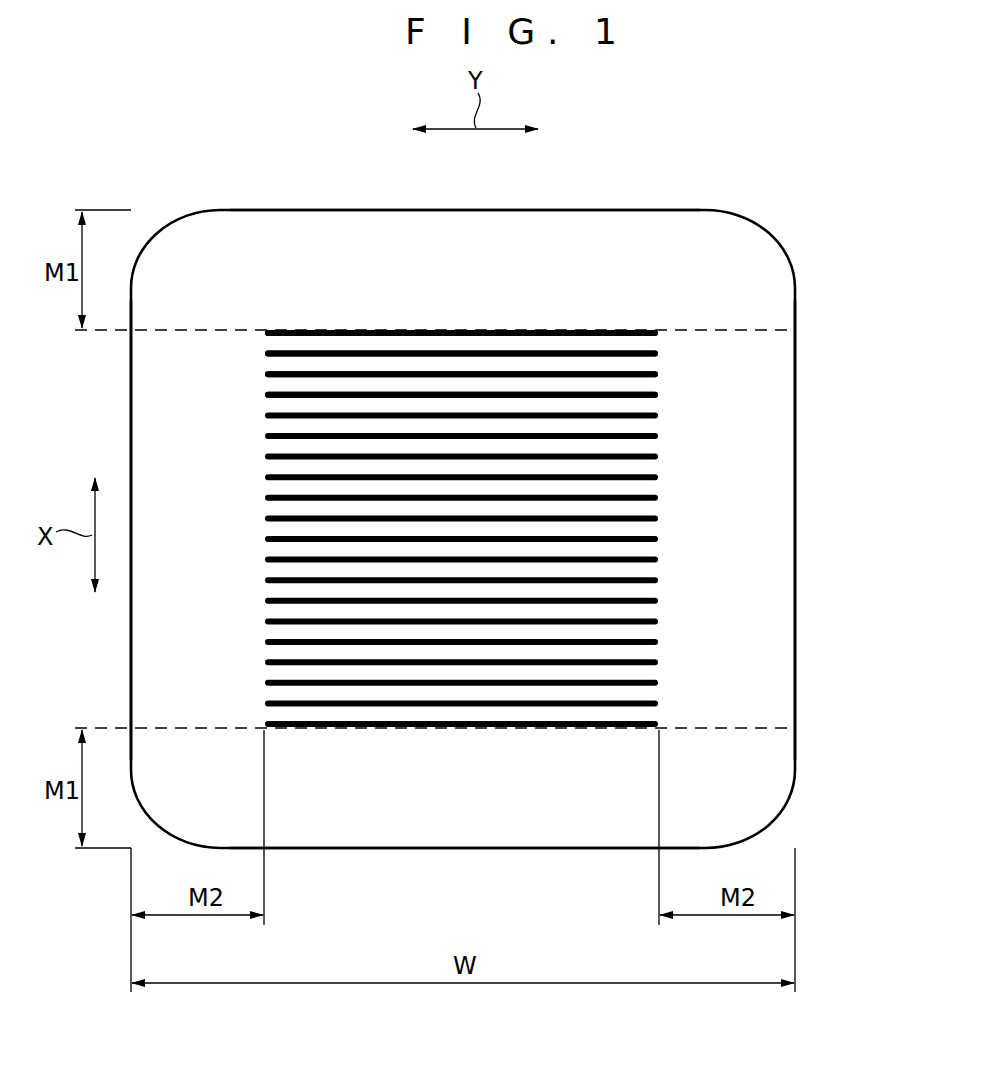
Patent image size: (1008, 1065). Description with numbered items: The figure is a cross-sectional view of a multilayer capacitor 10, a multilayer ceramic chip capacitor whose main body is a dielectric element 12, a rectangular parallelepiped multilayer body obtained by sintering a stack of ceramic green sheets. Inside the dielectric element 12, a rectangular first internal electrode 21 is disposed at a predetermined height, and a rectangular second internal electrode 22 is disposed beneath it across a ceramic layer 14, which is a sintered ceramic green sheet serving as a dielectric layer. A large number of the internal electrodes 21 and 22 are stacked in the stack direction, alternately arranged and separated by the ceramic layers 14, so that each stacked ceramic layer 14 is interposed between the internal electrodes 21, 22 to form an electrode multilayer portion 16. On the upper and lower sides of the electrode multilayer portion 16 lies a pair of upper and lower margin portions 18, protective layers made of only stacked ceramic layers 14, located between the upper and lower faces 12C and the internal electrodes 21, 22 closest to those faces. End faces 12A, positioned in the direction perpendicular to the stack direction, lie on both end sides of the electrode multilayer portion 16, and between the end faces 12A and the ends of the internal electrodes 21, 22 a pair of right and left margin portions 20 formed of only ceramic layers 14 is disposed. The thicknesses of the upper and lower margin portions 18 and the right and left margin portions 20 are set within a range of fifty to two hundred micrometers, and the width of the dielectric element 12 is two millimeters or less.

The multilayer capacitor 10 is at (480, 529).
The dielectric element 12 is at (770, 242).
The end faces 12A is at (130, 435).
The upper and lower faces 12C is at (520, 210).
The ceramic layer 14 is at (350, 410).
The electrode multilayer portion 16 is at (458, 486).
The upper and lower margin portions 18 is at (652, 255).
The right and left margin portions 20 is at (168, 632).
The internal electrode 21 is at (645, 413).
The internal electrode 22 is at (290, 437).